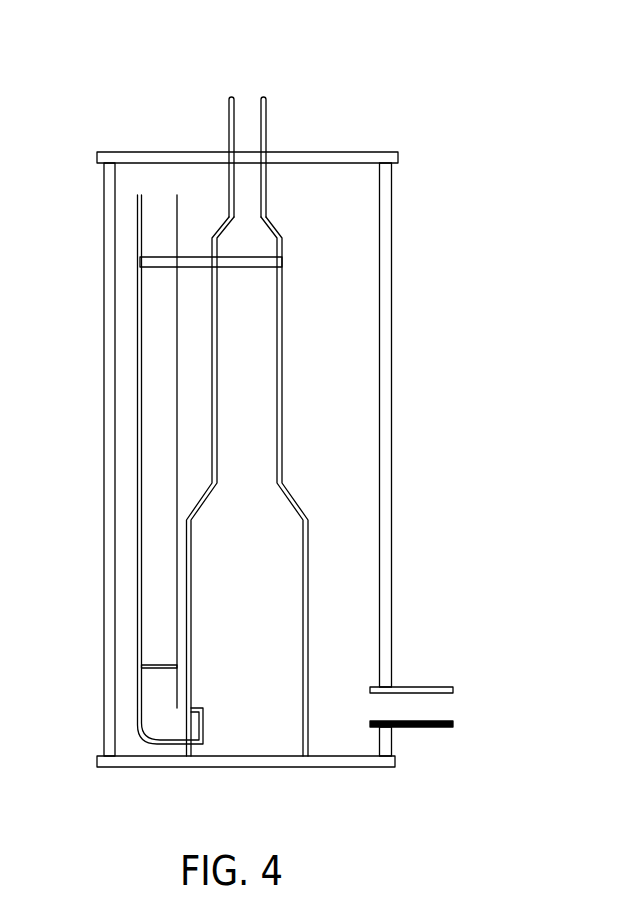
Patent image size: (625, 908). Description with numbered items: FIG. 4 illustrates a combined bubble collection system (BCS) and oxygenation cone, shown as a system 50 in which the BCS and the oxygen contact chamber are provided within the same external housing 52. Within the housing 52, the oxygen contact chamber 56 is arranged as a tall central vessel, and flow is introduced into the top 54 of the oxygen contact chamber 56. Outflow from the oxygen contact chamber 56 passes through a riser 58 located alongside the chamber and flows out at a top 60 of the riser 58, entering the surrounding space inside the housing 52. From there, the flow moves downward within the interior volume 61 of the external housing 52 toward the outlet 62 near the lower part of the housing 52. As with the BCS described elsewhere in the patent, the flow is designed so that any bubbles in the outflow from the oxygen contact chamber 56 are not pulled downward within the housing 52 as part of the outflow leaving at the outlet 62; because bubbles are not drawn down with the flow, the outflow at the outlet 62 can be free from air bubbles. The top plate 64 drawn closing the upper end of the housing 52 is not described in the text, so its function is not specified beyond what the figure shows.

The system 50 is at (528, 146).
The external housing 52 is at (393, 400).
The top of the oxygen contact chamber 54 is at (239, 88).
The oxygen contact chamber 56 is at (283, 333).
The riser 58 is at (145, 732).
The top of the riser 60 is at (145, 240).
The interior volume 61 is at (338, 505).
The outlet 62 is at (423, 728).
The top plate 64 is at (170, 152).